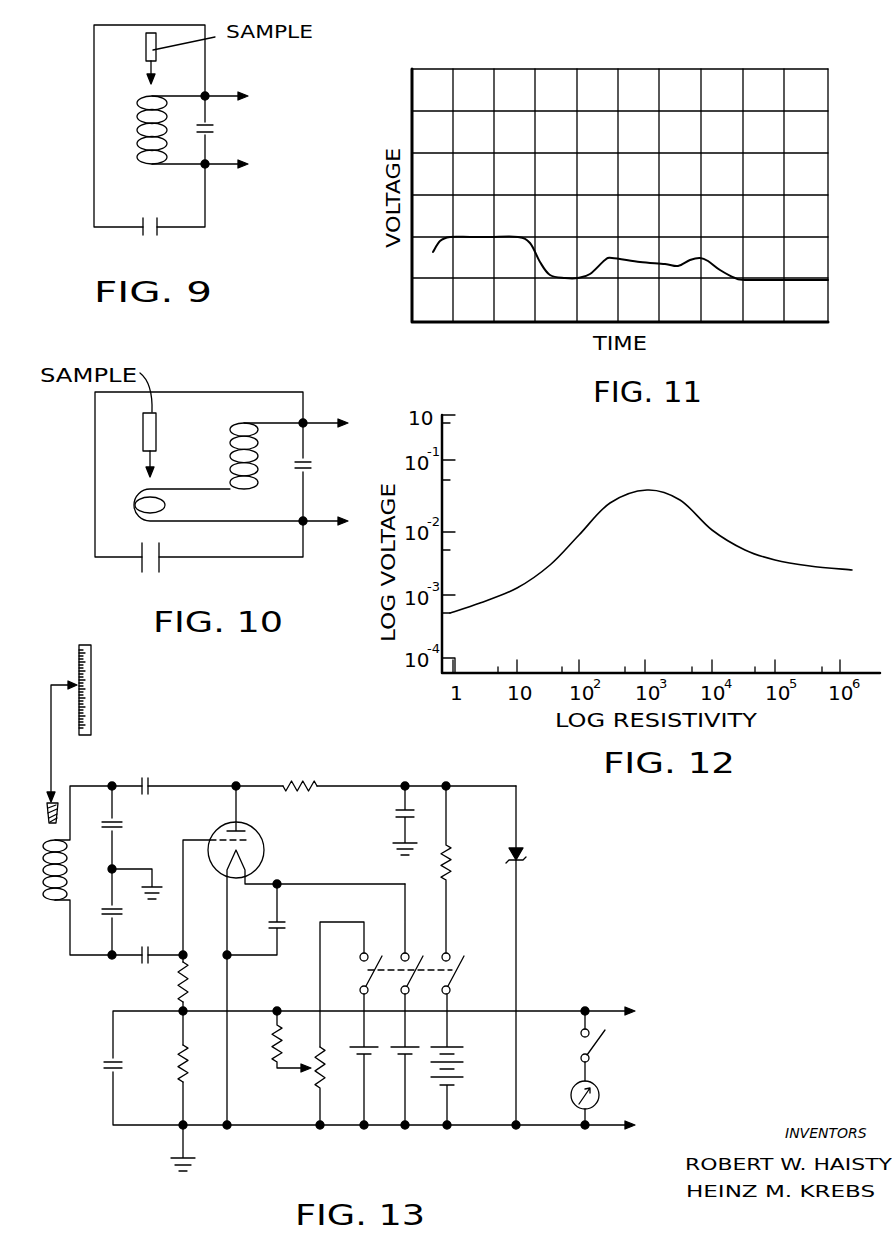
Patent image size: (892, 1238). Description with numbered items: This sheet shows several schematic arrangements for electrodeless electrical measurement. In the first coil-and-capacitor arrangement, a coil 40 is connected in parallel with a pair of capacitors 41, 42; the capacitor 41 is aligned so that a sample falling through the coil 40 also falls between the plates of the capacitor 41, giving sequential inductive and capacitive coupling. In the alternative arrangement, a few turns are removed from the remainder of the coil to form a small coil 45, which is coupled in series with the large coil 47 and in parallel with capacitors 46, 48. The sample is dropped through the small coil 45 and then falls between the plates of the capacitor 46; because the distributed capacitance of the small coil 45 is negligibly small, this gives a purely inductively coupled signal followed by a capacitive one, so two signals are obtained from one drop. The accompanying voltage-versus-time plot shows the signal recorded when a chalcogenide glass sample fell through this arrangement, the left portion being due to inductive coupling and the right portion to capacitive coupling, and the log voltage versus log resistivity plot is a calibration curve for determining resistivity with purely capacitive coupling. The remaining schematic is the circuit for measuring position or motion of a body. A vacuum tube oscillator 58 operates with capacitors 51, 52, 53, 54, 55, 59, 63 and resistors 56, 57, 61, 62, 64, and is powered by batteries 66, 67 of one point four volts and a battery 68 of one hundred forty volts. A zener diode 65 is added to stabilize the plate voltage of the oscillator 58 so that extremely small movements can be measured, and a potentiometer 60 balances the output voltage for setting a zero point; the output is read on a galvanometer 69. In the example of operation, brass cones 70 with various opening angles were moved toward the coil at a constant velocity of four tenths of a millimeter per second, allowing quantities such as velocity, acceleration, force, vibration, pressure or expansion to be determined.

In FIG. 9, the coil 40 is at (136, 136).
In FIG. 9, the capacitor 41 is at (150, 238).
In FIG. 9, the capacitor 42 is at (212, 132).
In FIG. 10, the small coil 45 is at (137, 504).
In FIG. 10, the capacitor 46 is at (137, 571).
In FIG. 10, the large coil 47 is at (228, 446).
In FIG. 10, the capacitor 48 is at (312, 468).
In FIG. 13, the capacitor 51 is at (122, 826).
In FIG. 13, the capacitor 52 is at (104, 910).
In FIG. 13, the capacitor 53 is at (154, 765).
In FIG. 13, the capacitor 54 is at (140, 960).
In FIG. 13, the capacitor 55 is at (103, 1067).
In FIG. 13, the resistor 56 is at (165, 986).
In FIG. 13, the resistor 57 is at (176, 1064).
In FIG. 13, the vacuum tube oscillator 58 is at (258, 834).
In FIG. 13, the capacitor 59 is at (270, 922).
In FIG. 13, the potentiometer 60 is at (330, 1052).
In FIG. 13, the resistor 61 is at (272, 1050).
In FIG. 13, the resistor 62 is at (320, 770).
In FIG. 13, the capacitor 63 is at (396, 813).
In FIG. 13, the resistor 64 is at (478, 843).
In FIG. 13, the zener diode 65 is at (520, 857).
In FIG. 13, the battery 66 is at (378, 1055).
In FIG. 13, the battery 67 is at (408, 1048).
In FIG. 13, the battery 68 is at (465, 1057).
In FIG. 13, the galvanometer 69 is at (602, 1090).
In FIG. 13, the brass cone 70 is at (43, 813).